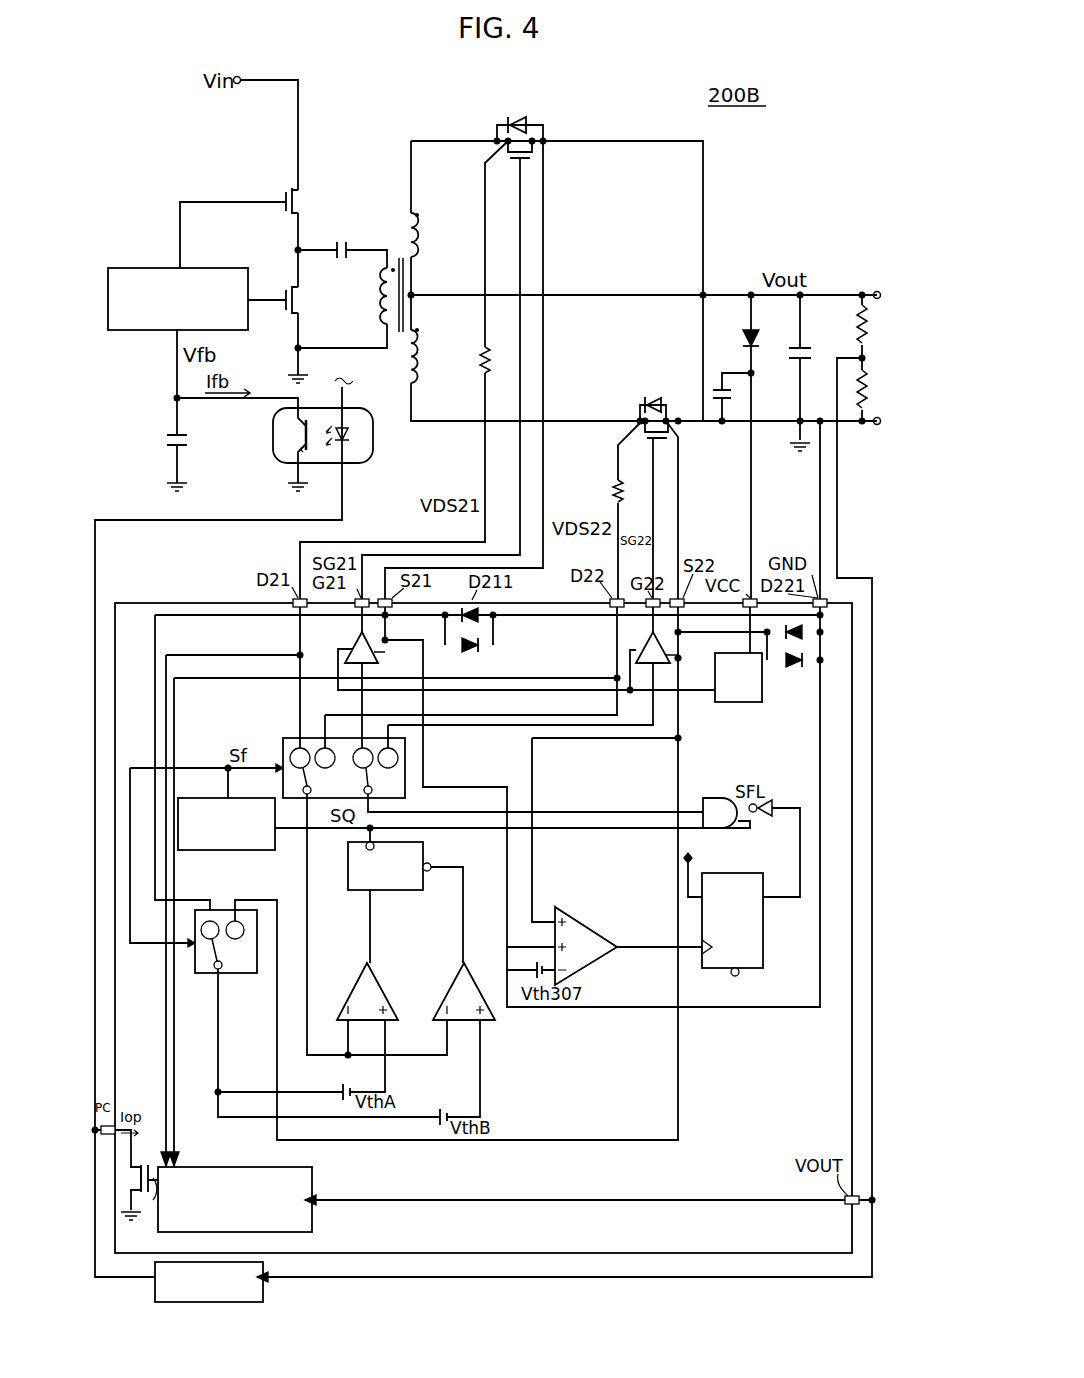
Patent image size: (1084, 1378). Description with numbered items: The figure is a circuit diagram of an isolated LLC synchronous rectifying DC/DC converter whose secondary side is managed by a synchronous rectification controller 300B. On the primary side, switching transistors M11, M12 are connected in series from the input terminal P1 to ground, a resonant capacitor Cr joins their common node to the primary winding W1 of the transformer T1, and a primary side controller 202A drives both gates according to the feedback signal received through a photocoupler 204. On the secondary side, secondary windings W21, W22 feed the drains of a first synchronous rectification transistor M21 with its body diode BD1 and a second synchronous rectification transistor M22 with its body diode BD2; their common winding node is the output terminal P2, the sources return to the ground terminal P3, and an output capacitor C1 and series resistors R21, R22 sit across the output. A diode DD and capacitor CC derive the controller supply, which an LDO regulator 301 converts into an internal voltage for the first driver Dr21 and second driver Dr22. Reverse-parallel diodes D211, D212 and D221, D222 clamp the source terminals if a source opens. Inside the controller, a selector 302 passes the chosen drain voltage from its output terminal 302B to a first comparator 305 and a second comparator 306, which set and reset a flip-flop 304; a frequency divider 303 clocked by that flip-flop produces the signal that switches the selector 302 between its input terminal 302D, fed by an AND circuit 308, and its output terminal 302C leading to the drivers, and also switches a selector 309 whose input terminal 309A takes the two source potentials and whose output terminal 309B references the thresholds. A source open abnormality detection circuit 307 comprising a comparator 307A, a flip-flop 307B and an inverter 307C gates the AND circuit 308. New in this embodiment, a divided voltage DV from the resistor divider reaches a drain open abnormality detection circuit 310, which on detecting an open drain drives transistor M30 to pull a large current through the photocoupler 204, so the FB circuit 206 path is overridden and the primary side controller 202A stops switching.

The input terminal P1 is at (240, 78).
The switching transistor M11 is at (298, 197).
The switching transistor M12 is at (299, 297).
The resonant capacitor Cr is at (338, 241).
The primary side controller 202A is at (142, 268).
The photocoupler 204 is at (273, 455).
The transformer T1 is at (392, 258).
The primary winding W1 is at (378, 300).
The secondary winding W21 is at (414, 224).
The secondary winding W22 is at (414, 362).
The body diode BD1 is at (520, 116).
The first synchronous rectification transistor M21 is at (536, 148).
The body diode BD2 is at (650, 397).
The second synchronous rectification transistor M22 is at (622, 436).
The output terminal P2 is at (880, 292).
The ground terminal P3 is at (880, 417).
The resistor R21 is at (882, 326).
The resistor R22 is at (882, 389).
The diode DD is at (732, 343).
The output capacitor C1 is at (790, 339).
The capacitor CC is at (718, 388).
The synchronous rectification controller 300B is at (150, 603).
The first driver Dr21 is at (356, 646).
The second driver Dr22 is at (636, 650).
The diode D211 is at (470, 604).
The diode D212 is at (470, 655).
The diode D221 is at (794, 632).
The diode D222 is at (796, 668).
The LDO regulator 301 is at (745, 702).
The selector 302 is at (290, 738).
The output terminal 302B is at (303, 790).
The output terminal 302C is at (398, 760).
The input terminal 302D is at (372, 791).
The frequency divider 303 is at (250, 850).
The flip-flop 304 is at (423, 850).
The first comparator 305 is at (392, 1020).
The second comparator 306 is at (490, 1020).
The source open abnormality detection circuit 307 is at (658, 881).
The comparator 307A is at (575, 910).
The flip-flop 307B is at (745, 972).
The inverter 307C is at (766, 818).
The AND circuit 308 is at (718, 798).
The selector 309 is at (205, 973).
The input terminal 309A is at (206, 910).
The output terminal 309B is at (222, 969).
The drain open abnormality detection circuit 310 is at (312, 1174).
The transistor M30 is at (139, 1200).
The divided voltage DV is at (873, 1190).
The FB circuit 206 is at (263, 1292).